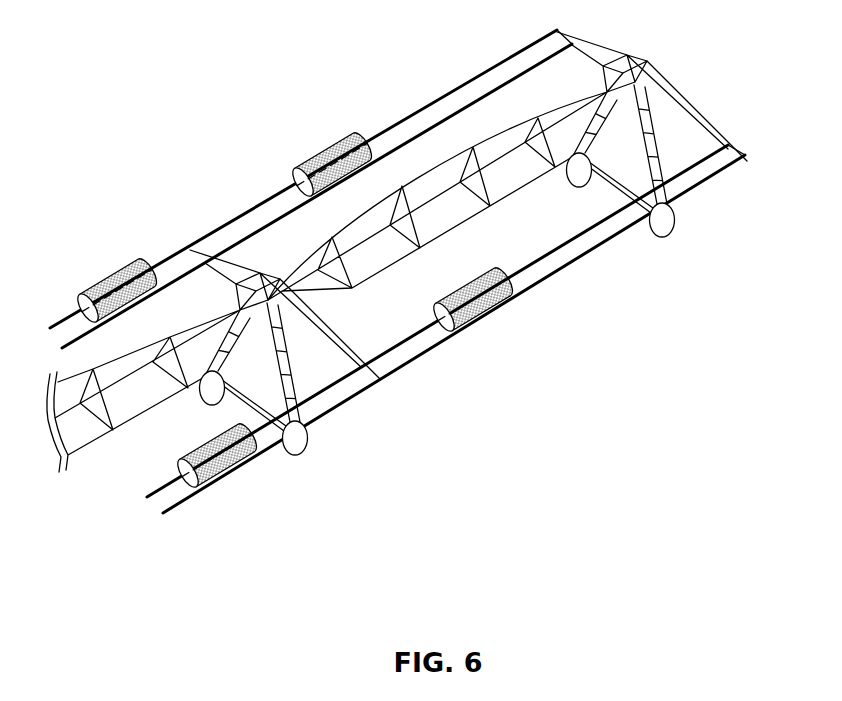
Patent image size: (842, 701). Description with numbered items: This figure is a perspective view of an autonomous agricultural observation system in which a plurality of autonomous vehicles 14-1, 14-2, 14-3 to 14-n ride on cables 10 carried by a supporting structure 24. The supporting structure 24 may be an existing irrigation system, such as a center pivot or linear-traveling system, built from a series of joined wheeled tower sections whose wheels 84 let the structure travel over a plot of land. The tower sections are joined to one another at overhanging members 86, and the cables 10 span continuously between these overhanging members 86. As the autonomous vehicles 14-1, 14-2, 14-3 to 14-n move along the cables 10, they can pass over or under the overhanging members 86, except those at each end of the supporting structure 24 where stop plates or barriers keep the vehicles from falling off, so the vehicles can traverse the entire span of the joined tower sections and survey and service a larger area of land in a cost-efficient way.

The cables 10 is at (473, 103).
The autonomous vehicle 14-1 is at (228, 480).
The autonomous vehicle 14-2 is at (492, 312).
The autonomous vehicle 14-3 is at (327, 143).
The autonomous vehicle 14-n is at (130, 267).
The supporting structure 24 is at (125, 427).
The wheels 84 is at (213, 405).
The overhanging members 86 is at (350, 340).